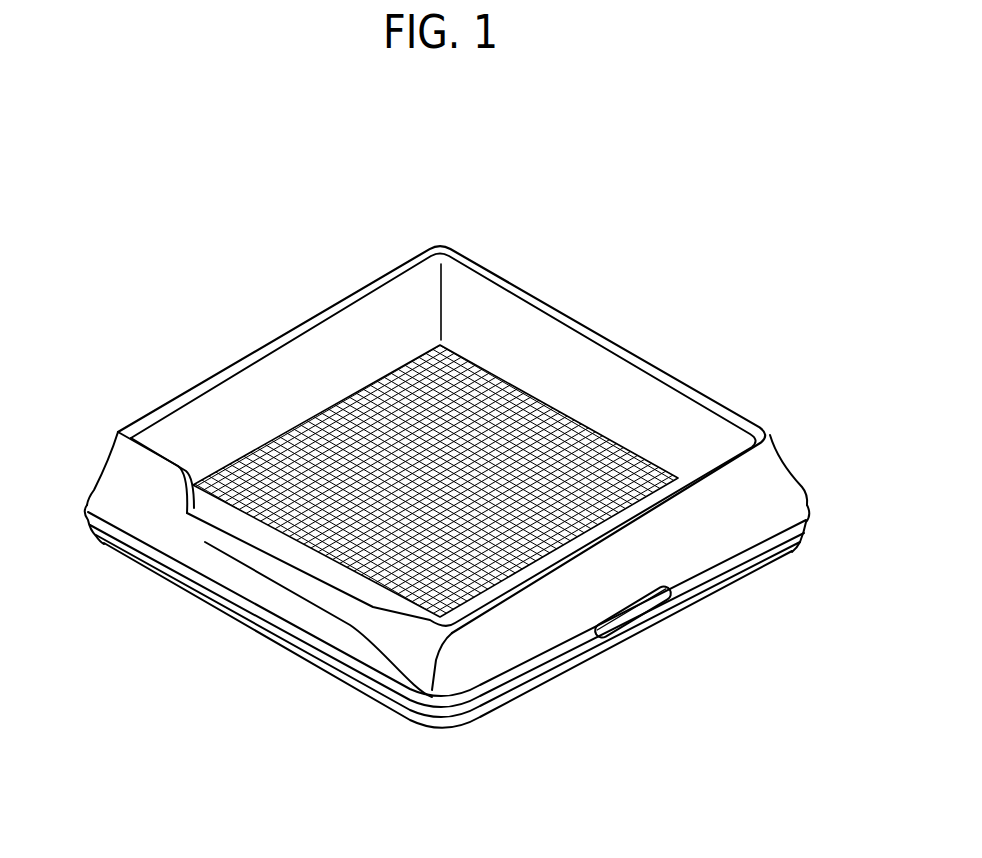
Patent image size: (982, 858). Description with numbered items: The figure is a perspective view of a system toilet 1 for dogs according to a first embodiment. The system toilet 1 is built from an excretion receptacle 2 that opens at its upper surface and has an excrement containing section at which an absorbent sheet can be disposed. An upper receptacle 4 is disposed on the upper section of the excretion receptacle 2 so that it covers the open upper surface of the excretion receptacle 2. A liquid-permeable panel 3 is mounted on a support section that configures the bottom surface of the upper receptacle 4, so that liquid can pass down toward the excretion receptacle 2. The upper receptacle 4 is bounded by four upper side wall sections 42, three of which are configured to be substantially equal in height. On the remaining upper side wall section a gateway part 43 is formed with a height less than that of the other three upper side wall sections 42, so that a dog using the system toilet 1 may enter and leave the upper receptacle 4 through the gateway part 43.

The system toilet for dogs 1 is at (592, 252).
The excretion receptacle 2 is at (262, 630).
The liquid-permeable panel 3 is at (563, 437).
The upper receptacle 4 is at (243, 348).
The upper side wall sections 42 is at (669, 426).
The gateway part 43 is at (258, 549).